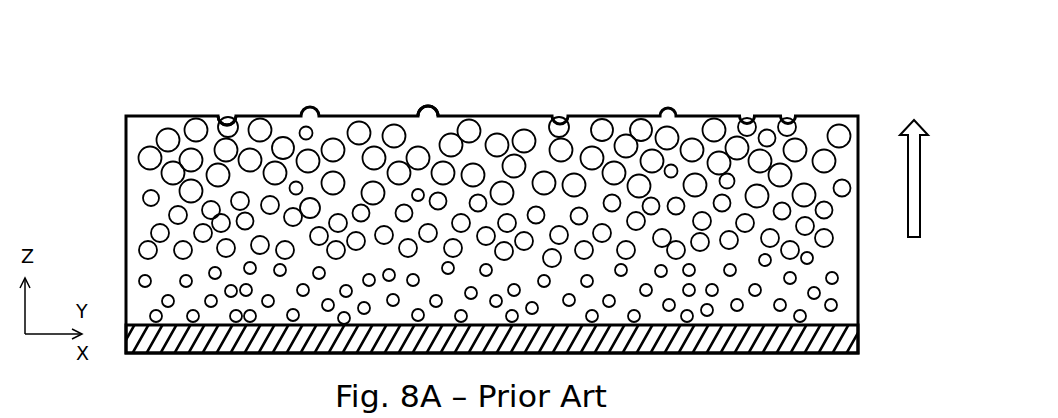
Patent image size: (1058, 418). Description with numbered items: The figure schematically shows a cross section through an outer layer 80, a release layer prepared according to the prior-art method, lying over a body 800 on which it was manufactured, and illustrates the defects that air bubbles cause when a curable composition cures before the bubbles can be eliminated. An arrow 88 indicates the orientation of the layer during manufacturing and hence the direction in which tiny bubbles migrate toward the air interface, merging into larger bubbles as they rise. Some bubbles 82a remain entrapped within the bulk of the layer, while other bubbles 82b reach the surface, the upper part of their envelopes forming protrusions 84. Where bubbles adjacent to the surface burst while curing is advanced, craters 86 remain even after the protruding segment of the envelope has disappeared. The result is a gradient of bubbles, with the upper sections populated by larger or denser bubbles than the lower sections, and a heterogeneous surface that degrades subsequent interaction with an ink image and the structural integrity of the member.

The outer layer 80 is at (780, 88).
The bubbles entrapped within the bulk of the layer 82a is at (836, 302).
The bubbles at the surface of the layer 82b is at (640, 133).
The protrusions 84 is at (434, 108).
The craters 86 is at (229, 116).
The arrow indicating direction of bubble migration 88 is at (900, 178).
The body 800 is at (861, 345).